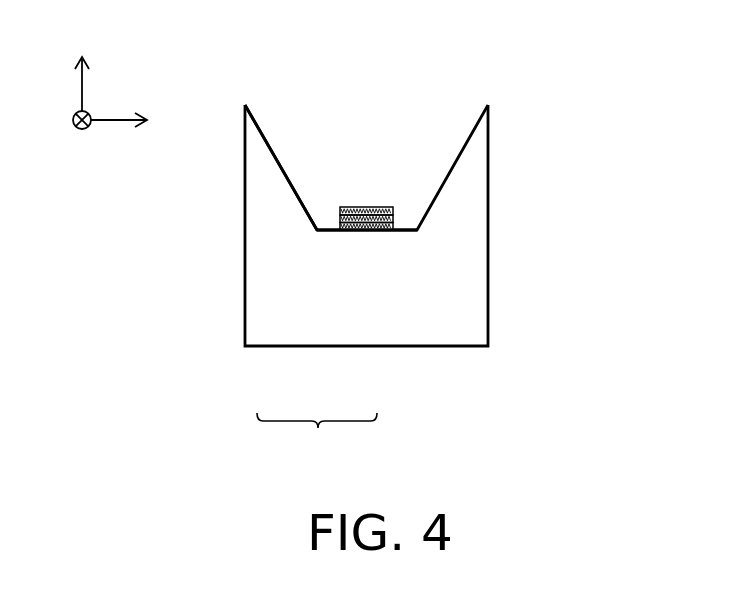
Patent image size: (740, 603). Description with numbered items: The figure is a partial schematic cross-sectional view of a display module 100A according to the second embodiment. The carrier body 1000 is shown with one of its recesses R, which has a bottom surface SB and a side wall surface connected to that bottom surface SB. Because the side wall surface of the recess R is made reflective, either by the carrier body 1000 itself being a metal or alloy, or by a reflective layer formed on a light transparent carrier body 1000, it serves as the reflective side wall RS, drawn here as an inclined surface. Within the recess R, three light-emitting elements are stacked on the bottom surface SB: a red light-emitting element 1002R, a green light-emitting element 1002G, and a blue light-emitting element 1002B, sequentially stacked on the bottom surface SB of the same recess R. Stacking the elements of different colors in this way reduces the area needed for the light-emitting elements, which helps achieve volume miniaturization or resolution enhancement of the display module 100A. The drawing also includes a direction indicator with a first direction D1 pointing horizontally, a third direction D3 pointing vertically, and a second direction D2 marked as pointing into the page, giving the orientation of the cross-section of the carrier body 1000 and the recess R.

The carrier body 1000 is at (477, 283).
The blue light-emitting element 1002B is at (340, 208).
The green light-emitting element 1002G is at (366, 207).
The red light-emitting element 1002R is at (396, 223).
The reflective side wall RS is at (306, 211).
The bottom surface SB is at (329, 233).
The recess R is at (317, 440).
The display module 100A is at (622, 442).
The first direction D1 is at (134, 124).
The second direction D2 is at (84, 143).
The third direction D3 is at (83, 65).